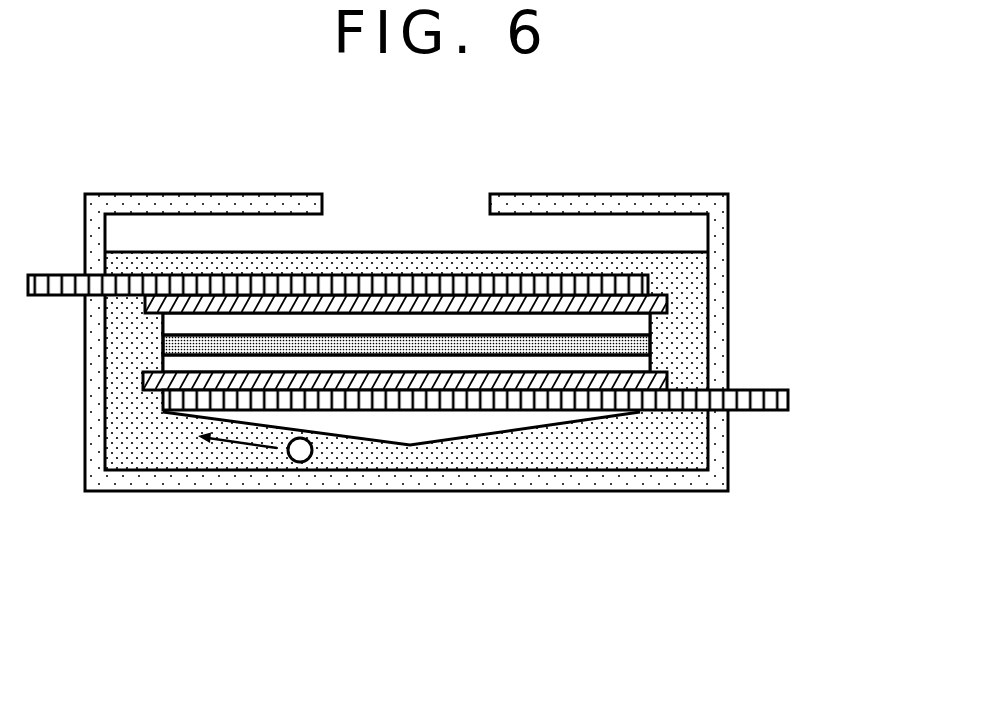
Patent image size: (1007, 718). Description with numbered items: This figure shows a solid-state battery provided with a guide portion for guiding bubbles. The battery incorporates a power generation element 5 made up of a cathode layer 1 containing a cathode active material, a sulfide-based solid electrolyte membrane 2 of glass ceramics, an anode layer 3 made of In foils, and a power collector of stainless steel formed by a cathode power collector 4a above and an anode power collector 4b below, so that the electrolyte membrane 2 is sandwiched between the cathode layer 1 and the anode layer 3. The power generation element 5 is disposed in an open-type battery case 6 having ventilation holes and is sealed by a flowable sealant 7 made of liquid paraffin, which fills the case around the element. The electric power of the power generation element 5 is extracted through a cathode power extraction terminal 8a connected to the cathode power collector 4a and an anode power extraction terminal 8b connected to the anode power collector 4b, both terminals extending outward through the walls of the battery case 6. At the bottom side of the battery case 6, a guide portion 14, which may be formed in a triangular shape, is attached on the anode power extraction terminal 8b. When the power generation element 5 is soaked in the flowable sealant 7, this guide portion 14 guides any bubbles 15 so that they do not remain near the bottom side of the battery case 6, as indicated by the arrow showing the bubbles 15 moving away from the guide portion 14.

The cathode layer 1 is at (650, 314).
The sulfide-based solid electrolyte membrane 2 is at (650, 341).
The anode layer 3 is at (650, 361).
The cathode power collector 4a is at (667, 301).
The anode power collector 4b is at (667, 381).
The power generation element 5 is at (837, 275).
The battery case 6 is at (626, 207).
The flowable sealant 7 is at (663, 258).
The cathode power extraction terminal 8a is at (549, 282).
The anode power extraction terminal 8b is at (762, 396).
The guide portion 14 is at (413, 427).
The bubbles 15 is at (300, 462).